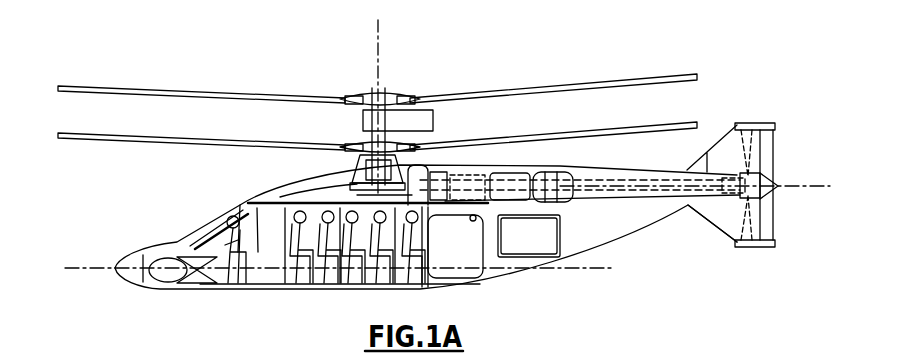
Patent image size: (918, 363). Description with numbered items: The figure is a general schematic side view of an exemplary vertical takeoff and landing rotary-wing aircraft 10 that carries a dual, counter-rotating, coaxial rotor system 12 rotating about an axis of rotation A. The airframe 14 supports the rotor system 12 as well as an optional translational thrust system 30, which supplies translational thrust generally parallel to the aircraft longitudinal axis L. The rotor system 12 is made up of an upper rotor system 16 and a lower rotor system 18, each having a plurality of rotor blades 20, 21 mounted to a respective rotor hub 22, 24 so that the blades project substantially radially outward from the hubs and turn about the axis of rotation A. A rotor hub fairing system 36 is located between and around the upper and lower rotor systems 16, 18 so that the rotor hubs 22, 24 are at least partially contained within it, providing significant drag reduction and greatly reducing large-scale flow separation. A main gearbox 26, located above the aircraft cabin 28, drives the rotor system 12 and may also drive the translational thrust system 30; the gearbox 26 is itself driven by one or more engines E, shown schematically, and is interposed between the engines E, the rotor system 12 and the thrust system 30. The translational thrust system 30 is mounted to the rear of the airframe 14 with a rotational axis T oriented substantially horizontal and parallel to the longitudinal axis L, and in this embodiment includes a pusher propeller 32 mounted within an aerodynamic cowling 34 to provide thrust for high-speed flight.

The rotary-wing aircraft 10 is at (572, 66).
The coaxial rotor system 12 is at (426, 86).
The airframe 14 is at (265, 193).
The upper rotor system 16 is at (361, 86).
The lower rotor system 18 is at (334, 140).
The rotor blades 20 is at (507, 135).
The upper rotor blades 21 is at (347, 97).
The rotor hub 22 is at (388, 87).
The rotor hub 24 is at (433, 123).
The main gearbox 26 is at (355, 182).
The aircraft cabin 28 is at (323, 273).
The translational thrust system 30 is at (782, 153).
The pusher propeller 32 is at (753, 165).
The aerodynamic cowling 34 is at (755, 125).
The rotor hub fairing system 36 is at (353, 121).
The axis of rotation A is at (379, 38).
The engines E is at (527, 172).
The rotational axis T is at (797, 187).
The aircraft longitudinal axis L is at (597, 267).